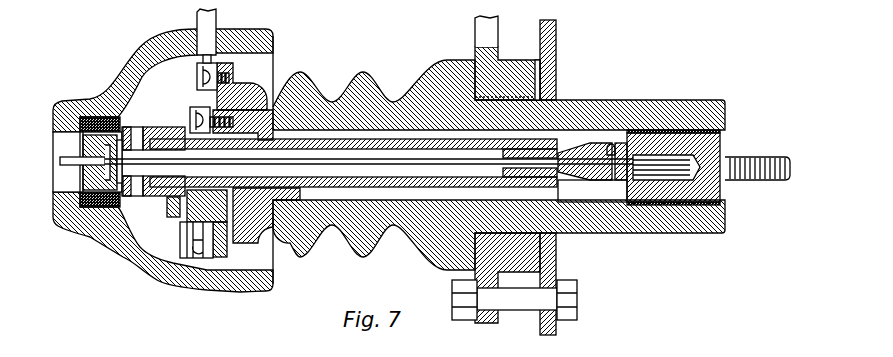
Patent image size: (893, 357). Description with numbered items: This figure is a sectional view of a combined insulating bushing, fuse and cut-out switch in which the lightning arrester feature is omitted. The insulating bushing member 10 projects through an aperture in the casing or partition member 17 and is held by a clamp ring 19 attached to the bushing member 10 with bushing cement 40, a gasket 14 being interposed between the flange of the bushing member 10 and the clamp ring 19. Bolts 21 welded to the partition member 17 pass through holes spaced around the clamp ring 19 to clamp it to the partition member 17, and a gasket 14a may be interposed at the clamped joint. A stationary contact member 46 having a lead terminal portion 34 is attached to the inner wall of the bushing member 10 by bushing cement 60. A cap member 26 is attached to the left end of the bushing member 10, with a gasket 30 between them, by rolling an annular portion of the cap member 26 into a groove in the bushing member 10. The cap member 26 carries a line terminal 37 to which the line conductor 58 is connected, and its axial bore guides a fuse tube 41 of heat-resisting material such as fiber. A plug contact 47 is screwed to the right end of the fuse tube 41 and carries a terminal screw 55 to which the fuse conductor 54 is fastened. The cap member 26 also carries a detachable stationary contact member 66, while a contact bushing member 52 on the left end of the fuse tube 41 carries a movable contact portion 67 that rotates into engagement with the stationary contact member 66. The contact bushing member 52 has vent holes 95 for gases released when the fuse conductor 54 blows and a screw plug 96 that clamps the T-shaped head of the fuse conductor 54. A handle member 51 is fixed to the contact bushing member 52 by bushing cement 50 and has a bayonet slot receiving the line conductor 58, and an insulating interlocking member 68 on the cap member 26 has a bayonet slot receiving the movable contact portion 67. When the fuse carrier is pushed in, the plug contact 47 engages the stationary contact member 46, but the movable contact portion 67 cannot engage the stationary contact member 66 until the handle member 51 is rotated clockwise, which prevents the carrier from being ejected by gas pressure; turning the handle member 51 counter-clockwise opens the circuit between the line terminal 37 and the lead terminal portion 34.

The insulating bushing member 10 is at (312, 85).
The handle member 51 is at (148, 54).
The bushing cement 50 is at (123, 203).
The contact bushing member 52 is at (84, 184).
The screw plug 96 is at (92, 150).
The vent holes 95 is at (140, 128).
The fuse tube 41 is at (402, 186).
The cap member 26 is at (236, 91).
The line terminal 37 is at (200, 84).
The line conductor 58 is at (216, 27).
The interlocking member 68 is at (172, 219).
The movable contact portion 67 is at (183, 226).
The stationary contact member 66 is at (203, 253).
The gasket 30 is at (232, 222).
The gasket 14 is at (475, 60).
The bushing cement 40 is at (512, 93).
The gasket 14a is at (556, 75).
The casing or partition member 17 is at (558, 44).
The clamp ring 19 is at (480, 322).
The bolts 21 is at (453, 292).
The fuse conductor 54 is at (573, 153).
The terminal screw 55 is at (603, 151).
The plug contact 47 is at (577, 181).
The stationary contact member 46 is at (721, 188).
The bushing cement 60 is at (722, 203).
The lead terminal portion 34 is at (767, 157).